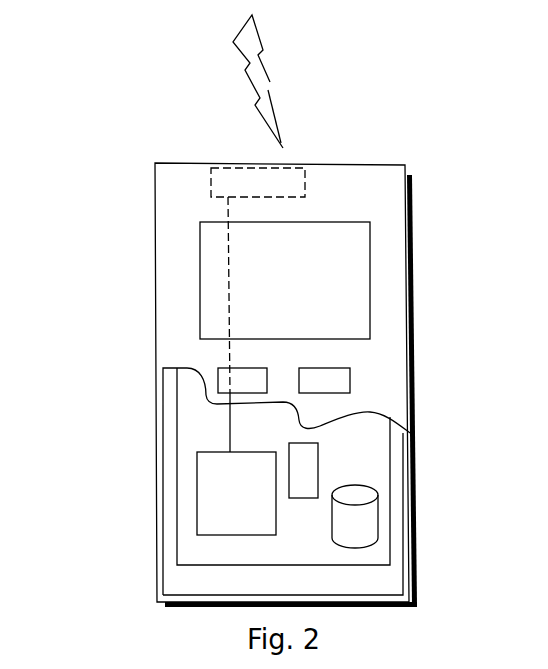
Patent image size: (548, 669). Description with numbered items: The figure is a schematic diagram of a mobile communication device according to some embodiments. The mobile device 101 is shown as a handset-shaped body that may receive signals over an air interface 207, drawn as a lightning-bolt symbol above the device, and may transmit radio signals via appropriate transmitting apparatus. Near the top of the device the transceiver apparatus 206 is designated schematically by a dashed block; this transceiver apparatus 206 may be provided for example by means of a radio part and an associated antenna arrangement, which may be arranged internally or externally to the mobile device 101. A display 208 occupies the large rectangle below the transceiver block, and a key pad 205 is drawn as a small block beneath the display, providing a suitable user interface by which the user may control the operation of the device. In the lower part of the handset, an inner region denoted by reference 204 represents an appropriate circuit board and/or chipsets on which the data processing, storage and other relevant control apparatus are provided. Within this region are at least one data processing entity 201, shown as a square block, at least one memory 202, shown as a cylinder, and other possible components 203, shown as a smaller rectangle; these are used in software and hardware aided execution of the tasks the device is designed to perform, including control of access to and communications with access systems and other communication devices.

The mobile device 101 is at (155, 199).
The data processing entity 201 is at (203, 477).
The memory 202 is at (350, 528).
The other possible components 203 is at (302, 457).
The circuit board 204 is at (198, 550).
The key pad 205 is at (222, 380).
The transceiver apparatus 206 is at (297, 178).
The air interface 207 is at (286, 105).
The display 208 is at (215, 268).